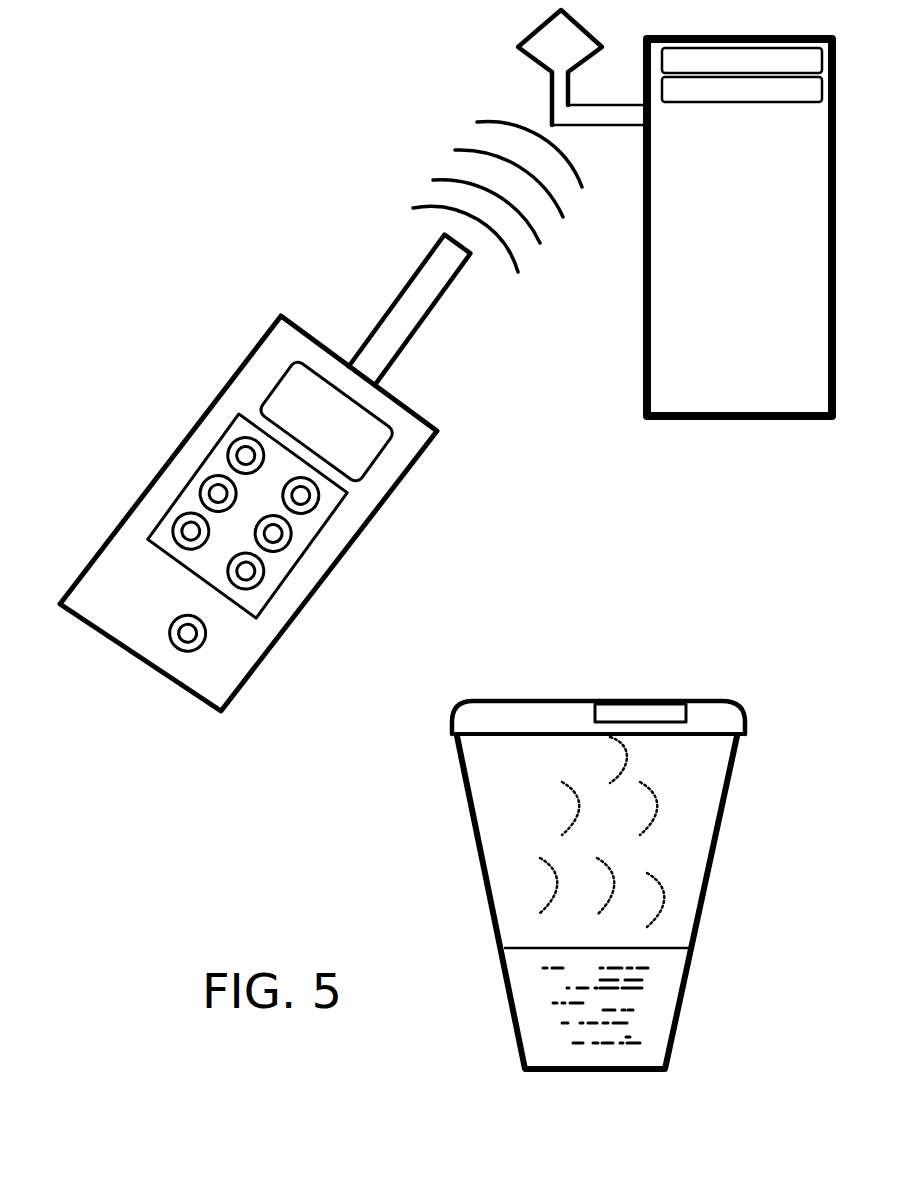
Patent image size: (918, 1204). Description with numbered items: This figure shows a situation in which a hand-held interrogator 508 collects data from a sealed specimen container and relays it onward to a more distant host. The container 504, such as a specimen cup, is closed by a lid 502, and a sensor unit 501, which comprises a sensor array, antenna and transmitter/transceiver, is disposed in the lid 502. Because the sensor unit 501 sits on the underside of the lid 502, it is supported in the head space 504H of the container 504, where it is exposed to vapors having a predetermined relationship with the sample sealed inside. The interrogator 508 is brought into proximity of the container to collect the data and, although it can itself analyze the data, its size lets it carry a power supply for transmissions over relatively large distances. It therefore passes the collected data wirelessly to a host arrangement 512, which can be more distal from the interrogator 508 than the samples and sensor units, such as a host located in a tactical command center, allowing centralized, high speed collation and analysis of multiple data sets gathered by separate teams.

The interrogator 508 is at (196, 421).
The host arrangement 512 is at (752, 362).
The lid 502 is at (545, 700).
The sensor unit 501 is at (662, 710).
The container 504 is at (477, 843).
The head space 504H is at (682, 763).